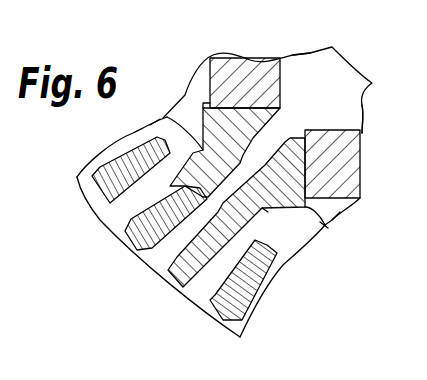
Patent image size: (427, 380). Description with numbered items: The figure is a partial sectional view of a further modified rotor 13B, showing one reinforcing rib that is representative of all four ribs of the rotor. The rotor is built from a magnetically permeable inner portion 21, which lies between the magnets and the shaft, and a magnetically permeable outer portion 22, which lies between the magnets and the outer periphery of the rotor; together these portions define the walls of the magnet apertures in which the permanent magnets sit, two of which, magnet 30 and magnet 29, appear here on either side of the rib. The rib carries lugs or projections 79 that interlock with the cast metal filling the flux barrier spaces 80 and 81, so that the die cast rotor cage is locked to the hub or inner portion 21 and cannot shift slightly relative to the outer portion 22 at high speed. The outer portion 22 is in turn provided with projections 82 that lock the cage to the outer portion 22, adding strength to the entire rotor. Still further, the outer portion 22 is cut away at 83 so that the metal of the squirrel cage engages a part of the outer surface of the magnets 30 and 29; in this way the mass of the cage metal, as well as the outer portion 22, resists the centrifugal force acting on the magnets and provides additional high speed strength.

The rotor 13B is at (309, 56).
The magnet 30 is at (224, 62).
The magnet 29 is at (357, 167).
The lugs or projections 79 is at (270, 147).
The flux barrier space 80 is at (291, 136).
The flux barrier space 81 is at (202, 108).
The projections 82 is at (160, 118).
The inner portion 21 is at (356, 119).
The outer portion 22 is at (331, 221).
The cut away 83 is at (323, 223).